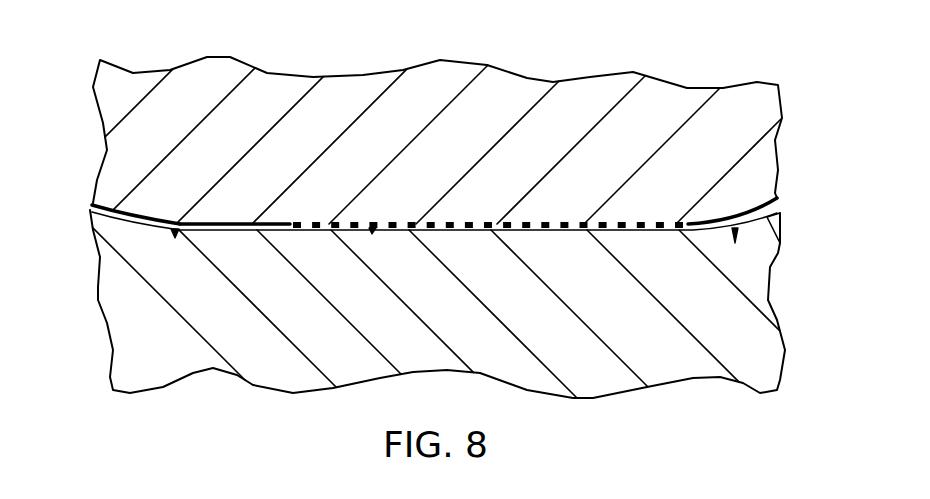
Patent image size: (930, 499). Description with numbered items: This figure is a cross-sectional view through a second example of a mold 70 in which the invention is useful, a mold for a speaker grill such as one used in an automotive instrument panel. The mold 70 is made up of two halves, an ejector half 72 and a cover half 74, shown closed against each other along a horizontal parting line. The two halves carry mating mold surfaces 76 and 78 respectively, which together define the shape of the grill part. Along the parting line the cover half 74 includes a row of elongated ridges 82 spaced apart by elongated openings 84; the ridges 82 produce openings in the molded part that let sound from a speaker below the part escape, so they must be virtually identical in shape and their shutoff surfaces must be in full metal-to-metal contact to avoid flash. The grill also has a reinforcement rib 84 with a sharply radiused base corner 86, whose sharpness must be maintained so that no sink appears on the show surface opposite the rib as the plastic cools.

The mold 70 is at (90, 75).
The ejector half 72 is at (783, 118).
The cover half 74 is at (771, 268).
The mold surface 76 is at (253, 231).
The mold surface 78 is at (244, 222).
The elongated ridges 82 is at (382, 227).
The elongated openings 84 is at (175, 239).
The sharply radiused base corner 86 is at (164, 231).